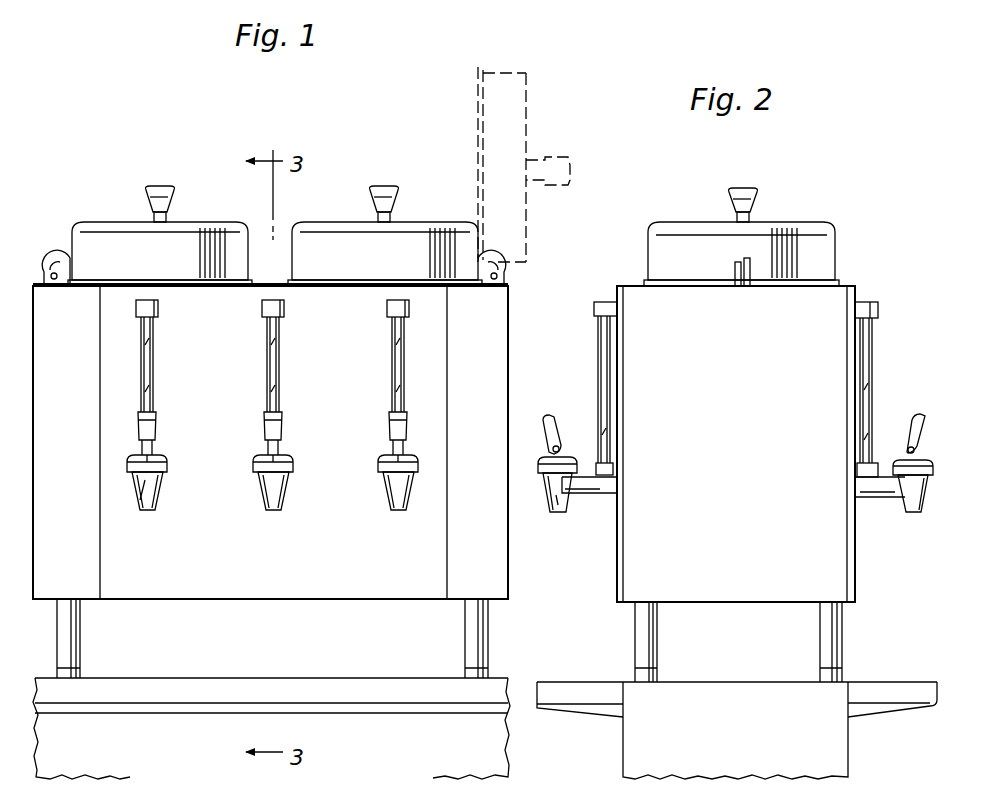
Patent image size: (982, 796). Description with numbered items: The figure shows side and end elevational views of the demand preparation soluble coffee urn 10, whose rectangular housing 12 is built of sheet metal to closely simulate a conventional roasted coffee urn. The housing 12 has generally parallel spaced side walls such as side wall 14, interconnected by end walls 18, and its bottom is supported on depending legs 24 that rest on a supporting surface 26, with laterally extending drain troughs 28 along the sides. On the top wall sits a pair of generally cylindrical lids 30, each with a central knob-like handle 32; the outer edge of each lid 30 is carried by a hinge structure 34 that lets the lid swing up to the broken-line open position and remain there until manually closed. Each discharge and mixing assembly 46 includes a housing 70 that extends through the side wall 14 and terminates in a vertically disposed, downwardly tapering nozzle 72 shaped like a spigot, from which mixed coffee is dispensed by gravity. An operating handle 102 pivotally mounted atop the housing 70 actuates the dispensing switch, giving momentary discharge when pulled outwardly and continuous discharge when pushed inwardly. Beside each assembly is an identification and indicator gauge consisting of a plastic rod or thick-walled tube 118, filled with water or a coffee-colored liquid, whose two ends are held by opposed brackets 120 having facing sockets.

In FIG. 1, the demand preparation soluble coffee urn 10 is at (520, 315).
In FIG. 2, the demand preparation soluble coffee urn 10 is at (845, 252).
In FIG. 1, the housing 12 is at (240, 568).
In FIG. 2, the housing 12 is at (612, 572).
In FIG. 1, the side wall 14 is at (338, 553).
In FIG. 2, the end wall 18 is at (737, 453).
In FIG. 2, the legs 24 is at (834, 633).
In FIG. 2, the supporting surface 26 is at (835, 746).
In FIG. 2, the drain trough 28 is at (884, 688).
In FIG. 1, the lid 30 is at (98, 236).
In FIG. 2, the lid 30 is at (790, 226).
In FIG. 1, the handle 32 is at (160, 186).
In FIG. 2, the handle 32 is at (748, 190).
In FIG. 1, the hinge structure 34 is at (50, 258).
In FIG. 2, the hinge structure 34 is at (736, 268).
In FIG. 1, the discharge and mixing assembly 46 is at (255, 490).
In FIG. 2, the housing 70 is at (605, 485).
In FIG. 1, the nozzle 72 is at (144, 490).
In FIG. 2, the nozzle 72 is at (556, 495).
In FIG. 2, the operating handle 102 is at (546, 416).
In FIG. 1, the plastic rod or tube 118 is at (396, 395).
In FIG. 2, the plastic rod or tube 118 is at (870, 360).
In FIG. 1, the brackets 120 is at (388, 303).
In FIG. 2, the brackets 120 is at (878, 304).